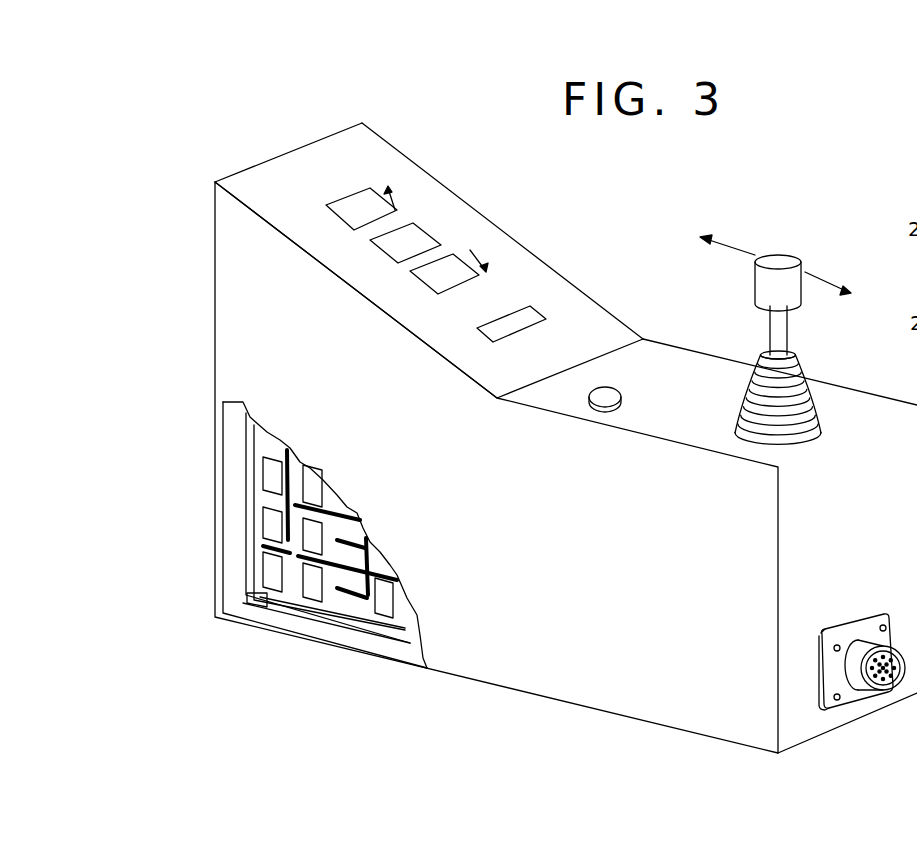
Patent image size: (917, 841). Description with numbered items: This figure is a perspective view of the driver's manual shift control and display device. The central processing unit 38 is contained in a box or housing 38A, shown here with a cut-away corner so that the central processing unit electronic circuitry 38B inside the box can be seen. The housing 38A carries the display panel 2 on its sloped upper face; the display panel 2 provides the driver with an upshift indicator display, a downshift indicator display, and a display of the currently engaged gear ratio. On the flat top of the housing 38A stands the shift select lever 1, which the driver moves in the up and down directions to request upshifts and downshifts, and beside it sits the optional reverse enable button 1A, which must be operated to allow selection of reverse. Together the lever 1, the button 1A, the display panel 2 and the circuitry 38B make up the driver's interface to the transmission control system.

The shift select lever 1 is at (792, 256).
The reverse enable button 1A is at (612, 410).
The display panel 2 is at (440, 198).
The central processing unit 38 is at (236, 470).
The housing 38A is at (538, 642).
The central processing unit electronic circuitry 38B is at (273, 518).